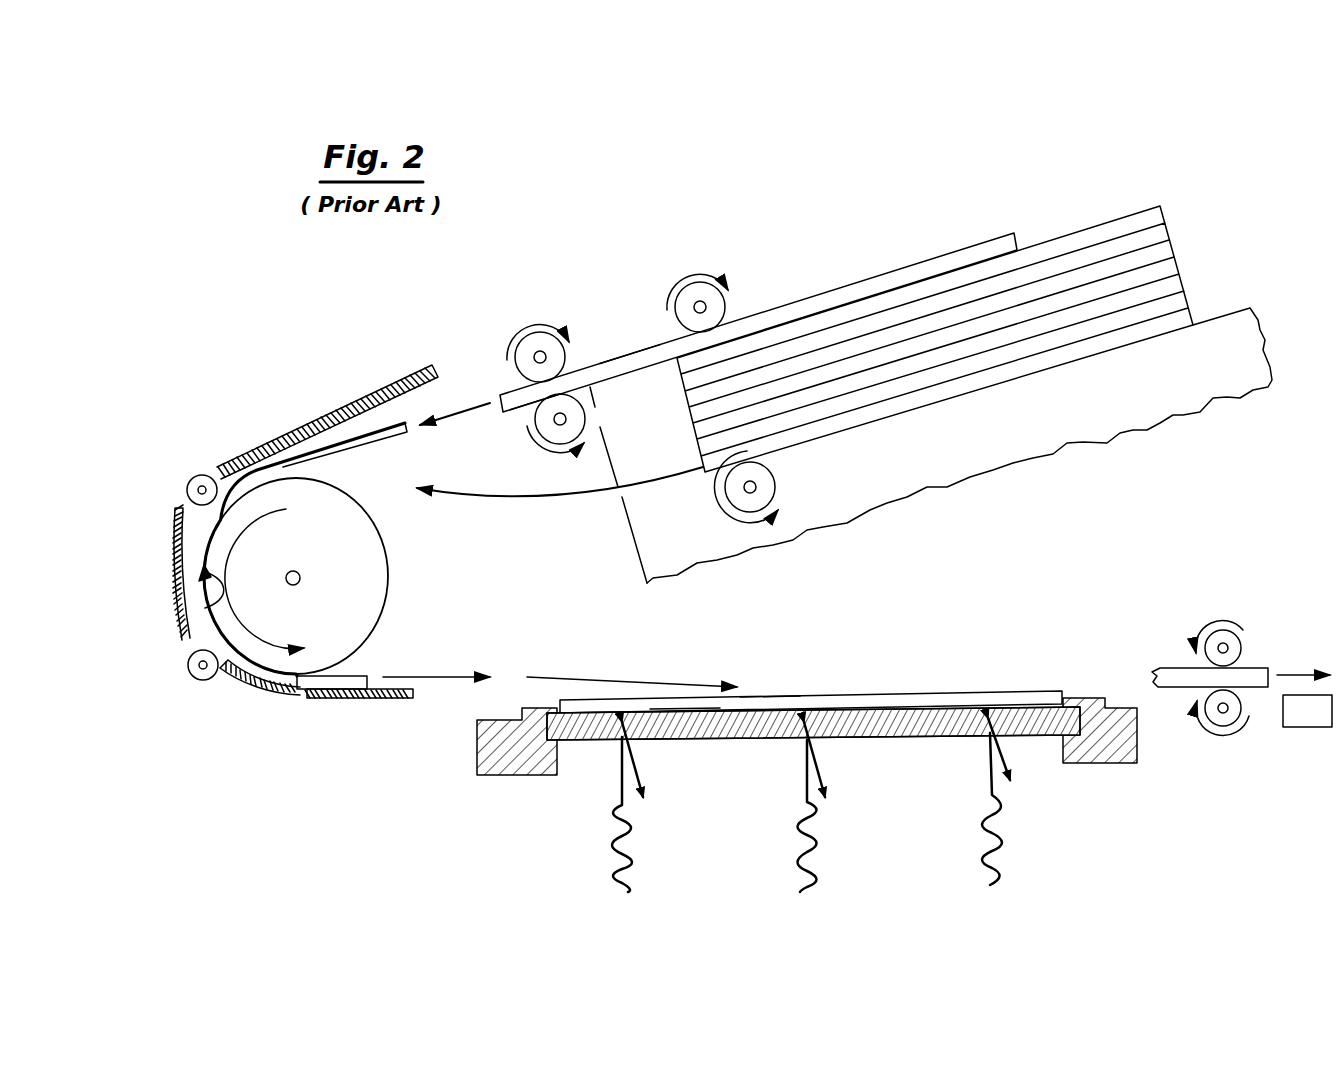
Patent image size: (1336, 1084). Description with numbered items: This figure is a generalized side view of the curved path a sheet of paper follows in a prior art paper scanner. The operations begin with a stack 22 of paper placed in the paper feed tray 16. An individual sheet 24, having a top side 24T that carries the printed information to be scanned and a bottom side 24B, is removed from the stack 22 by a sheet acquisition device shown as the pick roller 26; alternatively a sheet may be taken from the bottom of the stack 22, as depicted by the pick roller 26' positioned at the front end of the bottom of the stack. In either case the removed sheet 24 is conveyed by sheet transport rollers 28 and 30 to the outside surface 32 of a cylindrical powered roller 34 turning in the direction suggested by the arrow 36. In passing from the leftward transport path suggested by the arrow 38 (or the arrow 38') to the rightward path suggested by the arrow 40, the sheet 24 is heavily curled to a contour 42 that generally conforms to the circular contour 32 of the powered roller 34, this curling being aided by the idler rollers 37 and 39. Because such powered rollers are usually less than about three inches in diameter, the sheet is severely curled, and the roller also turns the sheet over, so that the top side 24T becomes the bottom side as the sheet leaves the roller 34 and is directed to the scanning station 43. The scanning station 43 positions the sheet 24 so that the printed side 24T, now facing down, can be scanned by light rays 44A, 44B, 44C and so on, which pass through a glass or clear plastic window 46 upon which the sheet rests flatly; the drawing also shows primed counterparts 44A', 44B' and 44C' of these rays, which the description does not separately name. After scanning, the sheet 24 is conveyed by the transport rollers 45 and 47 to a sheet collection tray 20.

The paper feed tray 16 is at (1043, 428).
The sheet collection tray 20 is at (1307, 733).
The stack 22 is at (1091, 230).
The sheet 24 is at (798, 301).
The top side 24T is at (624, 356).
The bottom side 24B is at (515, 409).
The pick roller 26 is at (705, 272).
The pick roller 26' is at (777, 487).
The sheet transport roller 28 is at (538, 335).
The sheet transport roller 30 is at (585, 418).
The outside surface 32 is at (385, 615).
The powered roller 34 is at (350, 568).
The arrow 36 is at (233, 555).
The idler roller 37 is at (200, 476).
The arrow 38 is at (455, 363).
The arrow 38' is at (560, 511).
The idler roller 39 is at (201, 680).
The arrow 40 is at (428, 682).
The contour 42 is at (213, 606).
The scanning station 43 is at (963, 677).
The light rays 44A is at (574, 814).
The heat radiation 44A' is at (674, 772).
The light rays 44B is at (766, 816).
The heat radiation 44B' is at (856, 781).
The light rays 44C is at (1042, 809).
The heat radiation 44C' is at (1044, 760).
The transport roller 45 is at (1233, 720).
The window 46 is at (897, 738).
The transport roller 47 is at (1237, 640).